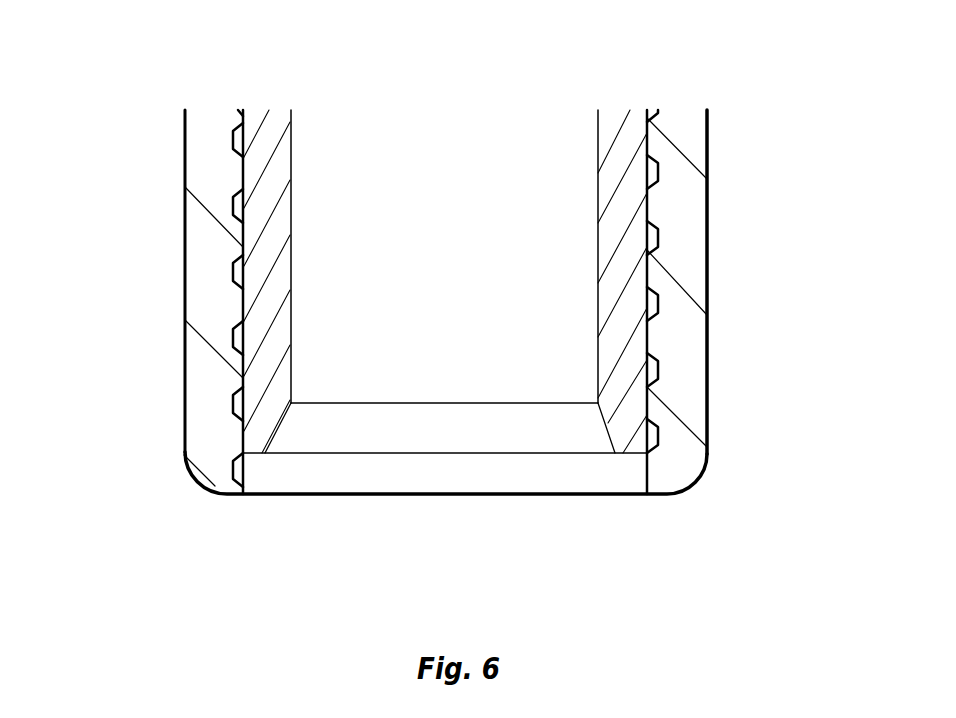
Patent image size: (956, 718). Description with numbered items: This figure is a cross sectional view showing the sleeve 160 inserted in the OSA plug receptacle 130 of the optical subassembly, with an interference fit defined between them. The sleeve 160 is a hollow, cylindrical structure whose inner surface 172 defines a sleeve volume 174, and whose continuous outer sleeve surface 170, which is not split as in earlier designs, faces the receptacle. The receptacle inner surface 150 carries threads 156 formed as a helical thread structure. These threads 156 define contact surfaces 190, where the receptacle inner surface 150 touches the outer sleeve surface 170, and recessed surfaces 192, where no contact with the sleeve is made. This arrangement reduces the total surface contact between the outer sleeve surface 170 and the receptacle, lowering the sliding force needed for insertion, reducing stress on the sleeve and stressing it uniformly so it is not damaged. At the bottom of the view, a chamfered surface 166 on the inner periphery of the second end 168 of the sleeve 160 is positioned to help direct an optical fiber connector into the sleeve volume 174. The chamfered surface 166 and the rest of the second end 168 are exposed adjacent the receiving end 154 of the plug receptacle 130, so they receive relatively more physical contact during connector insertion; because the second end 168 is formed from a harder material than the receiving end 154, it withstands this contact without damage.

The OSA plug receptacle 130 is at (158, 198).
The receptacle inner surface 150 is at (652, 366).
The receiving end 154 is at (650, 497).
The threads 156 is at (232, 223).
The sleeve 160 is at (267, 90).
The chamfered surface 166 is at (280, 428).
The second end 168 is at (258, 455).
The outer sleeve surface 170 is at (242, 208).
The inner surface 172 is at (597, 153).
The sleeve volume 174 is at (498, 372).
The contact surfaces 190 is at (645, 155).
The recessed surfaces 192 is at (653, 238).